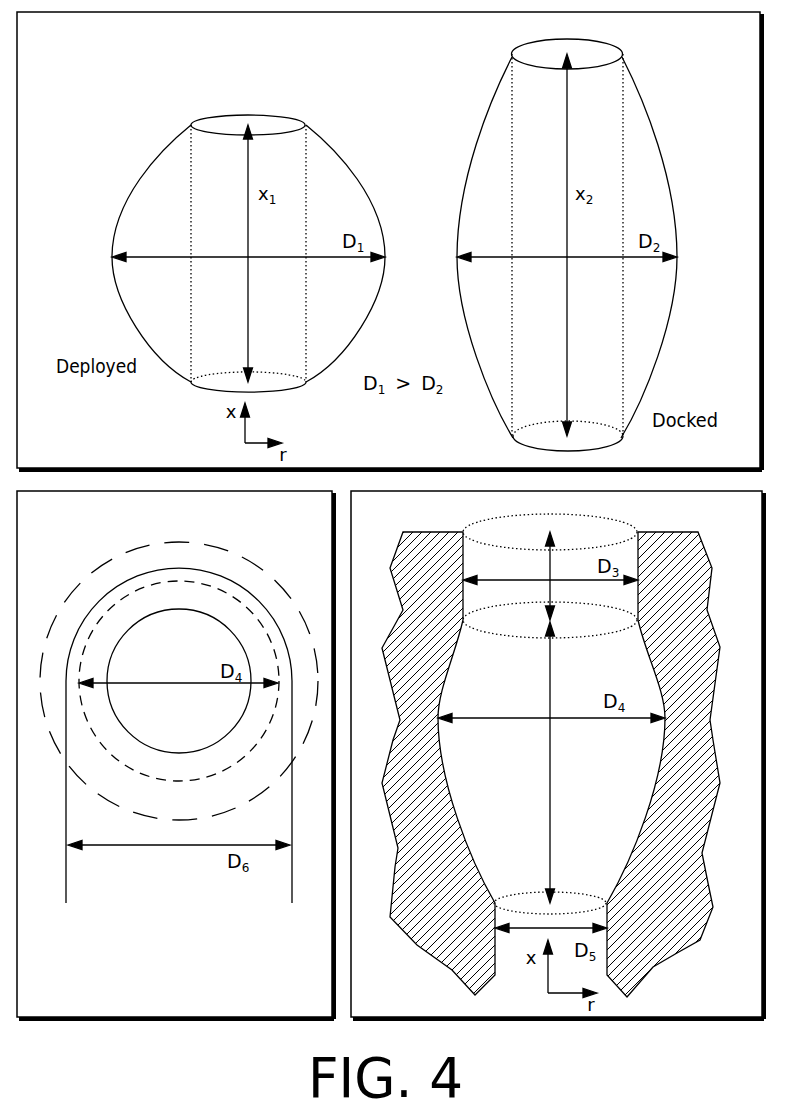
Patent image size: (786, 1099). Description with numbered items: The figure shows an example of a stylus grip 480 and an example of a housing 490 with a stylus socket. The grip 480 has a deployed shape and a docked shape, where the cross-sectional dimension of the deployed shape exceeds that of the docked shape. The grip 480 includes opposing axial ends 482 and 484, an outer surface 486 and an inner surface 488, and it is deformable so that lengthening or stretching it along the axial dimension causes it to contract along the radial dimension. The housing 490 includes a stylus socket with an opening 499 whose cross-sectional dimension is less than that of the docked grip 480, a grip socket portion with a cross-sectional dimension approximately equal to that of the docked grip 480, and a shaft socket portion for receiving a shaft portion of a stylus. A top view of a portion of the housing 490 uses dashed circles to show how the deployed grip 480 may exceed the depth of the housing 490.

The grip 480 is at (161, 63).
The axial end 482 is at (213, 118).
The axial end 484 is at (193, 387).
The outer surface 486 is at (147, 217).
The inner surface 488 is at (279, 126).
The housing 490 is at (140, 570).
The opening 499 is at (174, 752).